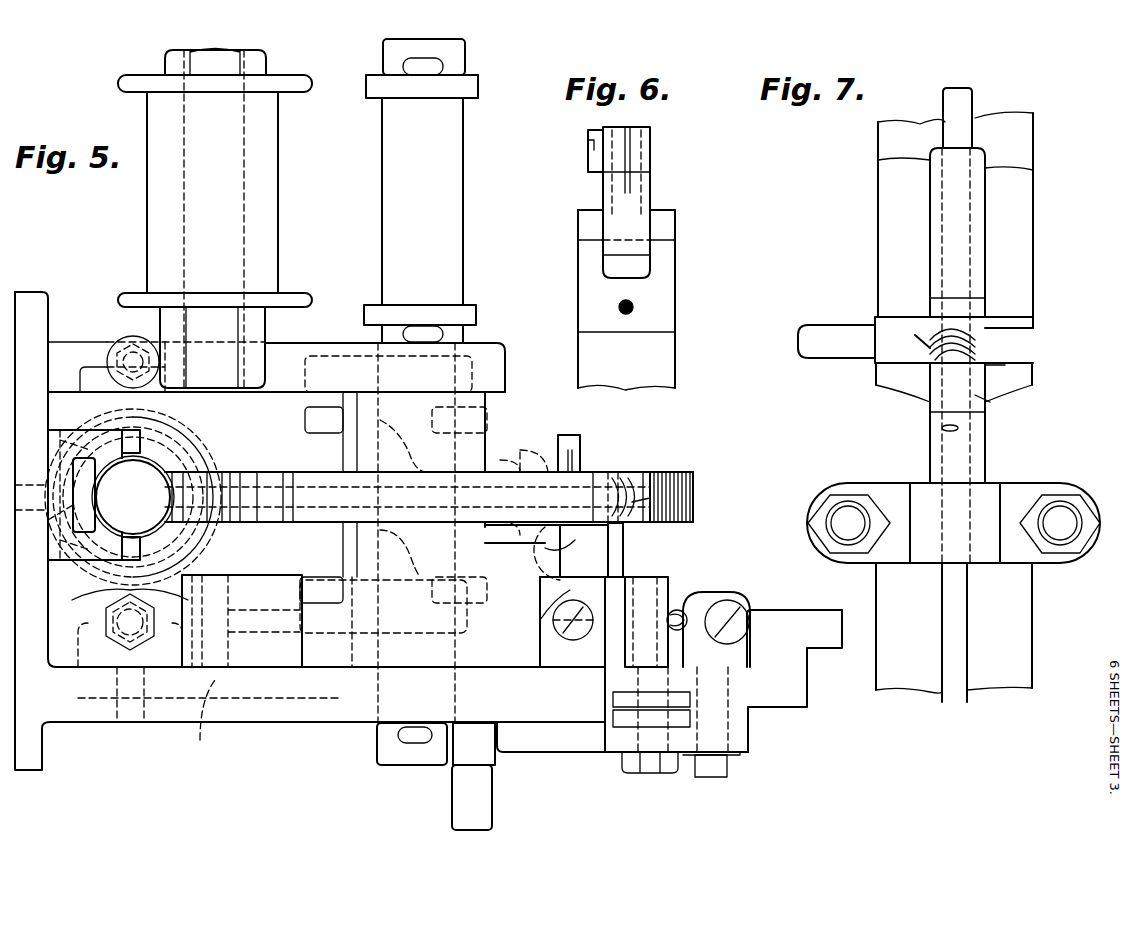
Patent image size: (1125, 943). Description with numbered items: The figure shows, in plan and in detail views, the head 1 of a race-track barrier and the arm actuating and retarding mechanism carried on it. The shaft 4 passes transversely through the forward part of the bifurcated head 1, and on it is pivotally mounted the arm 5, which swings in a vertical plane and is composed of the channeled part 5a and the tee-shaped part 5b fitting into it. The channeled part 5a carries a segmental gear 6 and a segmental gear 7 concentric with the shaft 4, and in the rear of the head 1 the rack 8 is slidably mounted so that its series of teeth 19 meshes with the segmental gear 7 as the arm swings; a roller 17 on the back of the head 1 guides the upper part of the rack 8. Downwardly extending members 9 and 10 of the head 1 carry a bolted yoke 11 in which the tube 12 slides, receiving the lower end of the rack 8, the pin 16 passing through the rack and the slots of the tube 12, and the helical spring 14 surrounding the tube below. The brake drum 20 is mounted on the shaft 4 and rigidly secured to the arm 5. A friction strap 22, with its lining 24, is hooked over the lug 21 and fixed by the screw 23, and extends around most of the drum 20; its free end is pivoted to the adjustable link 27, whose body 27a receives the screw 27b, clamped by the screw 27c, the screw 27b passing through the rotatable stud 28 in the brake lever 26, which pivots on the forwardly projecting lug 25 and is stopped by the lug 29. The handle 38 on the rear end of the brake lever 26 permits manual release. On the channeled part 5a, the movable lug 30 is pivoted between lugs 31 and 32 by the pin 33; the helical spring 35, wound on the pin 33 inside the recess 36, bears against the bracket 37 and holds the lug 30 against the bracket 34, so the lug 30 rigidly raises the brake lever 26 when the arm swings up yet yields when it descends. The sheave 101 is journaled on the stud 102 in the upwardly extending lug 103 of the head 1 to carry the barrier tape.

In FIG. 5, the head 1 is at (68, 720).
In FIG. 5, the shaft 4 is at (347, 783).
In FIG. 5, the arm 5 is at (598, 470).
In FIG. 7, the arm 5 is at (1046, 482).
In FIG. 5, the channeled part 5a is at (545, 450).
In FIG. 7, the channeled part 5a is at (1035, 252).
In FIG. 5, the tee-shaped part 5b is at (505, 480).
In FIG. 7, the tee-shaped part 5b is at (1030, 648).
In FIG. 5, the segmental gear 6 is at (248, 524).
In FIG. 5, the segmental gear 7 is at (694, 496).
In FIG. 5, the rack 8 is at (94, 497).
In FIG. 5, the downwardly extending member 9 is at (96, 364).
In FIG. 5, the downwardly extending member 10 is at (98, 640).
In FIG. 5, the yoke 11 is at (195, 478).
In FIG. 5, the tube 12 is at (174, 457).
In FIG. 5, the helical spring 14 is at (211, 538).
In FIG. 5, the pin 16 is at (140, 440).
In FIG. 5, the roller 17 is at (80, 512).
In FIG. 5, the series of teeth 19 is at (214, 487).
In FIG. 5, the brake drum 20 is at (523, 580).
In FIG. 5, the lug 21 is at (602, 582).
In FIG. 5, the friction strap 22 is at (185, 652).
In FIG. 6, the friction strap 22 is at (665, 296).
In FIG. 5, the screw 23 is at (568, 641).
In FIG. 5, the lining 24 is at (198, 645).
In FIG. 5, the forwardly projecting lug 25 is at (630, 732).
In FIG. 5, the brake lever 26 is at (773, 700).
In FIG. 5, the adjustable link 27 is at (650, 612).
In FIG. 6, the adjustable link 27 is at (660, 176).
In FIG. 5, the body 27a is at (660, 590).
In FIG. 6, the body 27a is at (650, 196).
In FIG. 5, the screw 27b is at (732, 600).
In FIG. 5, the screw 27c is at (682, 648).
In FIG. 6, the screw 27c is at (588, 162).
In FIG. 5, the rotatable stud 28 is at (710, 777).
In FIG. 5, the lug 29 is at (490, 765).
In FIG. 5, the movable lug 30 is at (542, 620).
In FIG. 7, the movable lug 30 is at (822, 356).
In FIG. 5, the lug 31 is at (622, 478).
In FIG. 7, the lug 31 is at (975, 310).
In FIG. 5, the lug 32 is at (650, 492).
In FIG. 7, the lug 32 is at (975, 398).
In FIG. 7, the pin 33 is at (960, 430).
In FIG. 5, the bracket 34 is at (562, 548).
In FIG. 7, the bracket 34 is at (890, 388).
In FIG. 5, the helical spring 35 is at (660, 510).
In FIG. 7, the helical spring 35 is at (915, 340).
In FIG. 5, the recess 36 is at (640, 478).
In FIG. 7, the recess 36 is at (935, 335).
In FIG. 5, the bracket 37 is at (582, 446).
In FIG. 7, the bracket 37 is at (1020, 356).
In FIG. 5, the lug or handle 38 is at (452, 812).
In FIG. 5, the sheave 101 is at (270, 200).
In FIG. 5, the stud 102 is at (266, 60).
In FIG. 5, the upwardly extending lug 103 is at (268, 324).